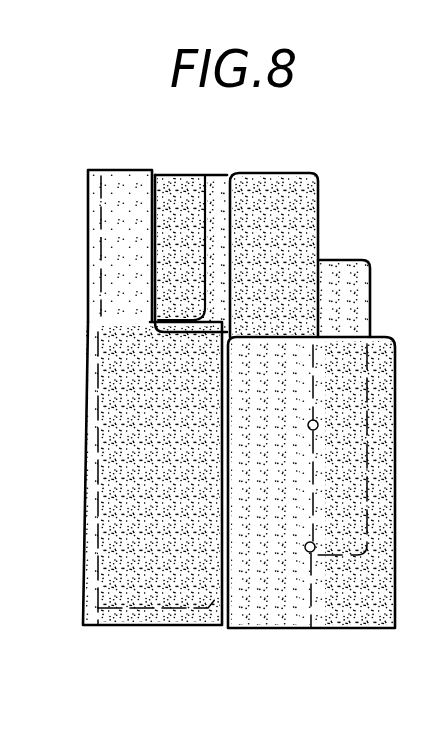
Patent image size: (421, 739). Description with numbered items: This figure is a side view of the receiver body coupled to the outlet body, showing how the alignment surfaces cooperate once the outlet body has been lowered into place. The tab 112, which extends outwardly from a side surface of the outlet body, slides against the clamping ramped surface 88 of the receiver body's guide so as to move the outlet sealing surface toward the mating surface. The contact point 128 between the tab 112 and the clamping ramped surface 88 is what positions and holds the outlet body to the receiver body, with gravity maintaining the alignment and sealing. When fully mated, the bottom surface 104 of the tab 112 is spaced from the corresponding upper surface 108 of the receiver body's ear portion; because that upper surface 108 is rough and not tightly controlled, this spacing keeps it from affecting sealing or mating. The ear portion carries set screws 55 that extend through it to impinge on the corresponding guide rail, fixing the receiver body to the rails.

The contact point 128 is at (148, 317).
The tab 112 is at (180, 203).
The clamping ramped surface 88 is at (172, 180).
The bottom surface 104 is at (212, 328).
The upper surface 108 is at (223, 340).
The set screws 55 is at (307, 427).